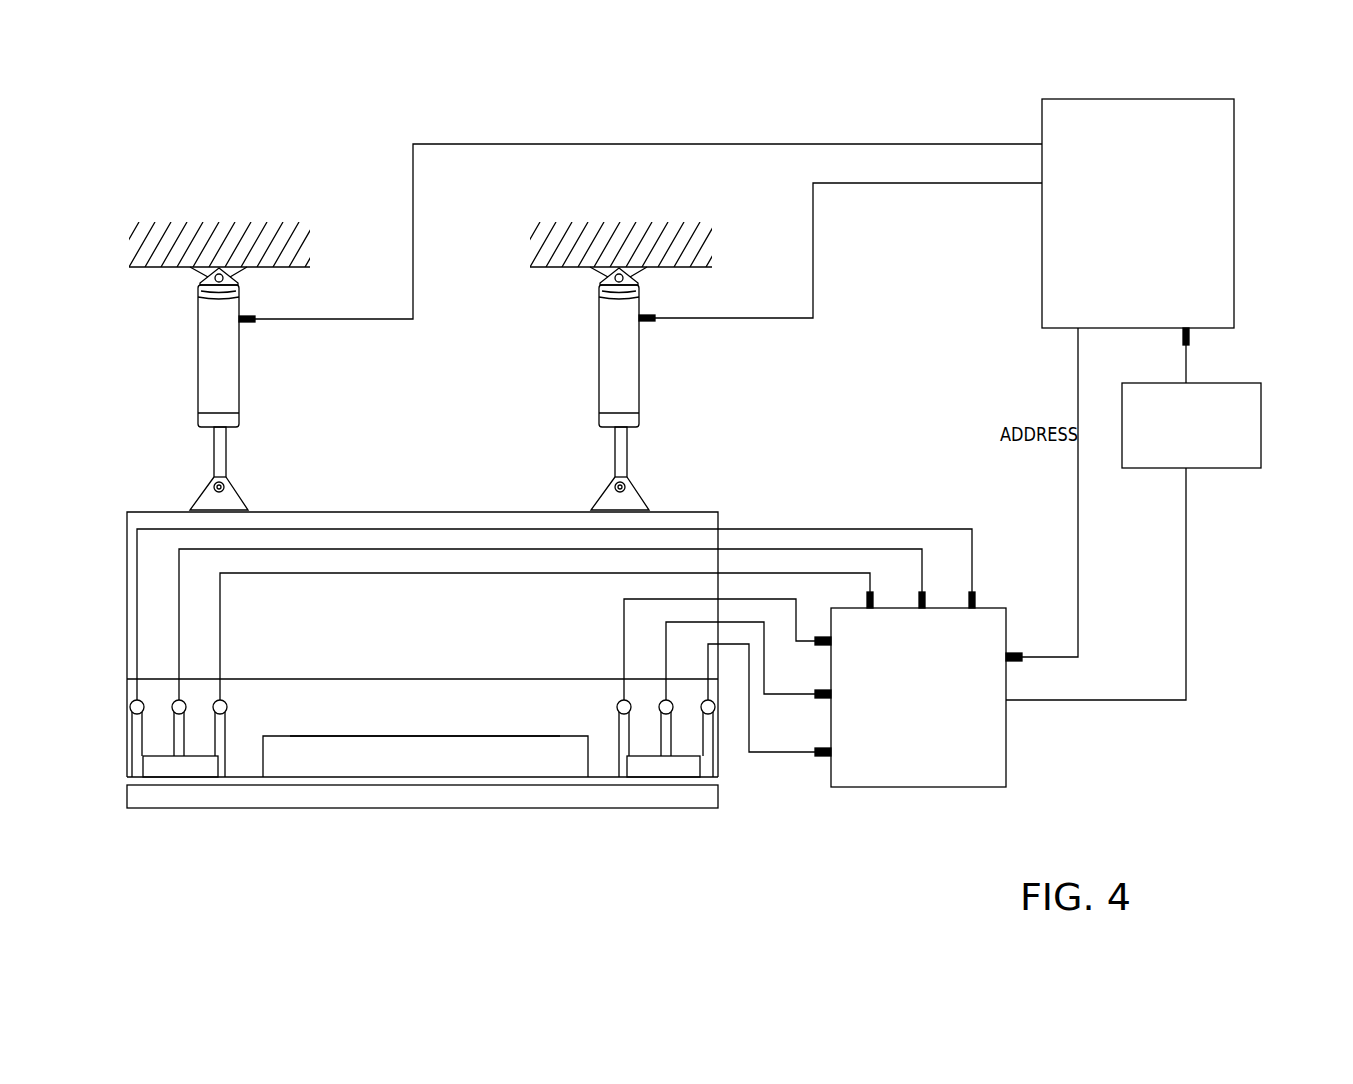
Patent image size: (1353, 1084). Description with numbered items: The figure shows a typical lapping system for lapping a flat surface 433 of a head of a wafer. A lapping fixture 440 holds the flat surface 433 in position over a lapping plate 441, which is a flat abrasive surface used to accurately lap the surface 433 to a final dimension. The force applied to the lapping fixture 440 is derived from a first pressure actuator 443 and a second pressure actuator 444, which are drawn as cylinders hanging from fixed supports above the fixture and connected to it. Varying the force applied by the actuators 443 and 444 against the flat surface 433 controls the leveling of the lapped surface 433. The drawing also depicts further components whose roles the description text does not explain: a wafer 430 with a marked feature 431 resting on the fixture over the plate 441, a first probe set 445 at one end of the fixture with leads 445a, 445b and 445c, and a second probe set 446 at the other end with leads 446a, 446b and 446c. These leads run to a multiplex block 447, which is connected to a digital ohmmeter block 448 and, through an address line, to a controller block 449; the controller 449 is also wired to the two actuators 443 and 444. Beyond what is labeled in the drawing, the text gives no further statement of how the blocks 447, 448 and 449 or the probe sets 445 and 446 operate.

The wafer 430 is at (457, 722).
The film layer on wafer 431 is at (310, 736).
The flat surface 433 is at (345, 777).
The lapping fixture 440 is at (418, 512).
The lapping plate 441 is at (473, 808).
The first pressure actuator 443 is at (239, 383).
The second pressure actuator 444 is at (639, 390).
The first probe set 445 is at (163, 770).
The first probe lead 445a is at (552, 624).
The first probe lead 445b is at (588, 614).
The first probe lead 445c is at (546, 634).
The second probe set 446 is at (656, 770).
The second probe lead 446a is at (748, 675).
The second probe lead 446b is at (769, 714).
The second probe lead 446c is at (727, 649).
The multiplexer 447 is at (950, 787).
The digital ohmmeter 448 is at (1227, 468).
The controller 449 is at (1234, 283).